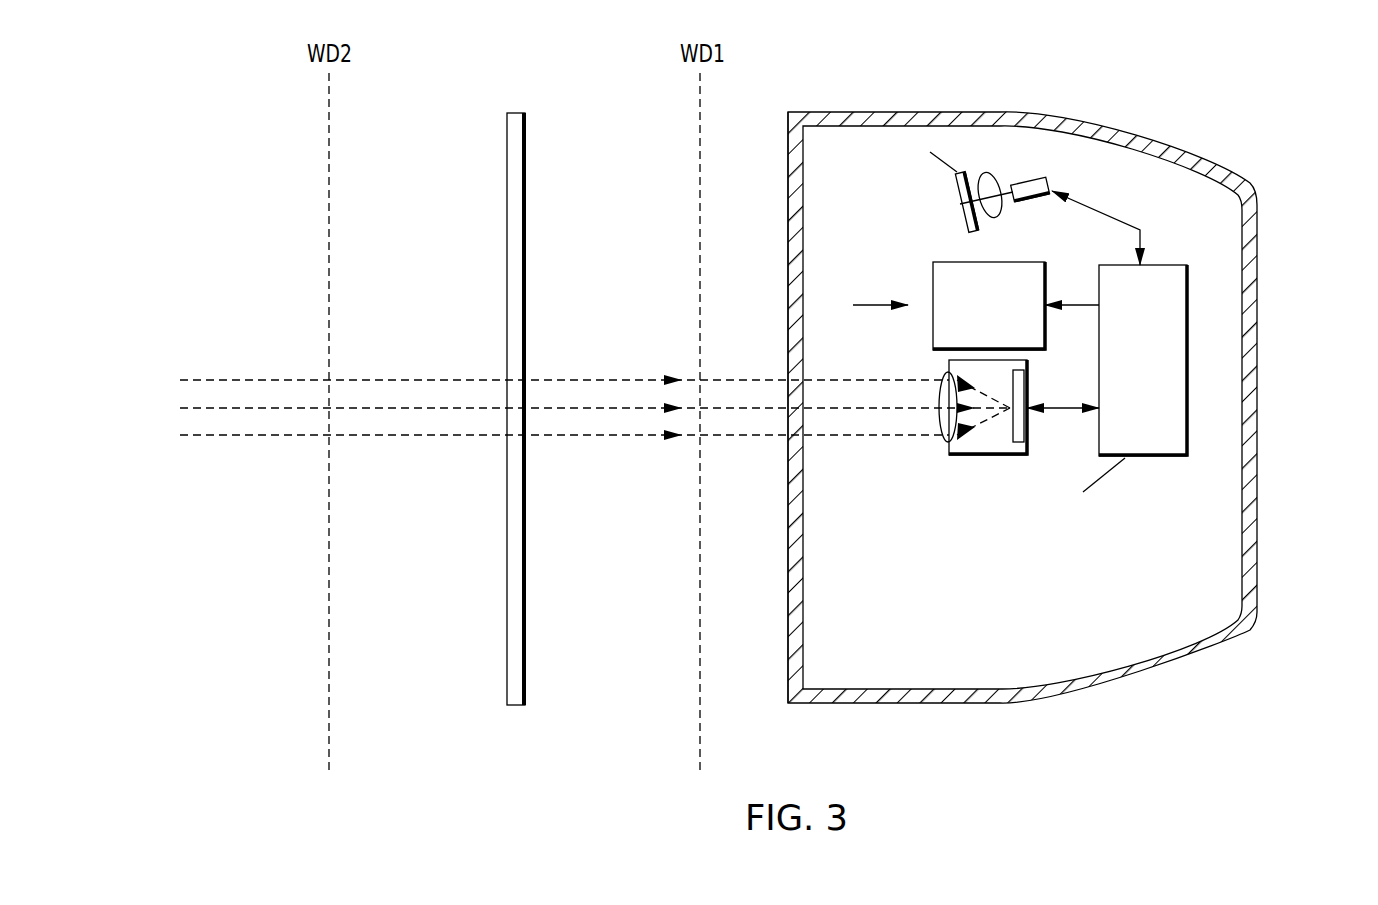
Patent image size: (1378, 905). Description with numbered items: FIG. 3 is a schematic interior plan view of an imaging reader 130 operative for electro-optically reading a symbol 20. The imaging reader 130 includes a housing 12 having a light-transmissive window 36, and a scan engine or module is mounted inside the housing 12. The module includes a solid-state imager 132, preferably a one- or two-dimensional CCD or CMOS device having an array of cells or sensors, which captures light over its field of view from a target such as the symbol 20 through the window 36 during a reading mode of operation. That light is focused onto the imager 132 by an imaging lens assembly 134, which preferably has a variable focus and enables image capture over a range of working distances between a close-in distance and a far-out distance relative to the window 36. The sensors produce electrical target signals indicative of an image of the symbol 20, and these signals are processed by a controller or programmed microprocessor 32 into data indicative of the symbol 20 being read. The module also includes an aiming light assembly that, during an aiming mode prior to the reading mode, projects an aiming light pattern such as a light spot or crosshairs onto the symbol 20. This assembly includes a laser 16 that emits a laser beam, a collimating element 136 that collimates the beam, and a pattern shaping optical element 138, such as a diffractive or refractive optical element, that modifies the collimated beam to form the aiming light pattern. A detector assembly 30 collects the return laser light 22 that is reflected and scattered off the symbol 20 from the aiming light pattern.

The housing 12 is at (1170, 674).
The laser 16 is at (1035, 200).
The symbol 20 is at (516, 172).
The return laser light 22 is at (866, 300).
The detector assembly 30 is at (1052, 264).
The controller 32 is at (1145, 458).
The light-transmissive window 36 is at (795, 257).
The imaging reader 130 is at (1047, 408).
The solid-state imager 132 is at (1027, 378).
The imaging lens assembly 134 is at (947, 380).
The collimating element 136 is at (998, 178).
The pattern shaping optical element 138 is at (961, 192).